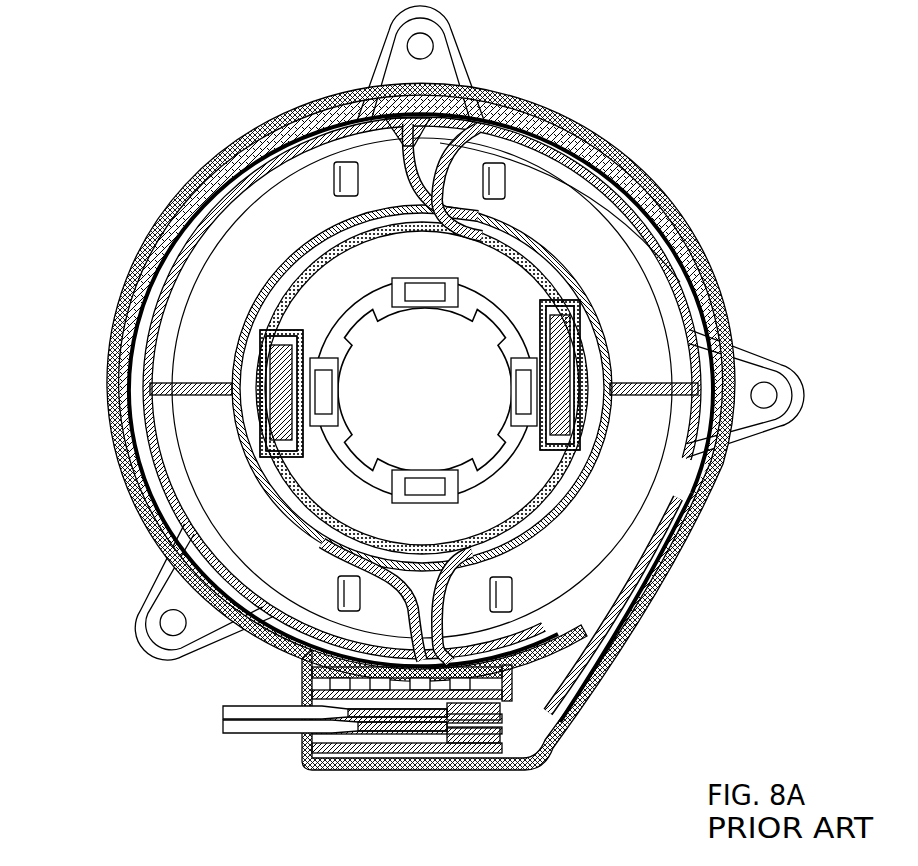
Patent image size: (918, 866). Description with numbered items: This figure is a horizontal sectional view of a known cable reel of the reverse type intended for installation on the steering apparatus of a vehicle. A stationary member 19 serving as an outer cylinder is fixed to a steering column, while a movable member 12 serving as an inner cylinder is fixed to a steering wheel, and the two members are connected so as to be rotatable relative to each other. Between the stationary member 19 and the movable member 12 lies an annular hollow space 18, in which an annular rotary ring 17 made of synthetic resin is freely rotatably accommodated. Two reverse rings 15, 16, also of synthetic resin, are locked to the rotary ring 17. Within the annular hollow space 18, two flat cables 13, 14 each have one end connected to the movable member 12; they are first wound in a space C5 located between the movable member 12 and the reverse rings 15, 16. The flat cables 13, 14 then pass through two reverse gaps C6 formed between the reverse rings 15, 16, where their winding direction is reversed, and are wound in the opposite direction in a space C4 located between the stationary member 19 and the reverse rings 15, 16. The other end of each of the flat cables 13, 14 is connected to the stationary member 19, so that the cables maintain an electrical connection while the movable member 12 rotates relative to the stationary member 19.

The movable member 12 is at (290, 247).
The flat cable 13 is at (520, 123).
The flat cable 14 is at (283, 655).
The reverse ring 15 is at (150, 248).
The reverse ring 16 is at (700, 252).
The rotary ring 17 is at (567, 713).
The annular hollow space 18 is at (432, 568).
The stationary member 19 is at (280, 117).
The space C4 is at (480, 100).
The space C5 is at (537, 233).
The reverse gap C6 is at (370, 82).